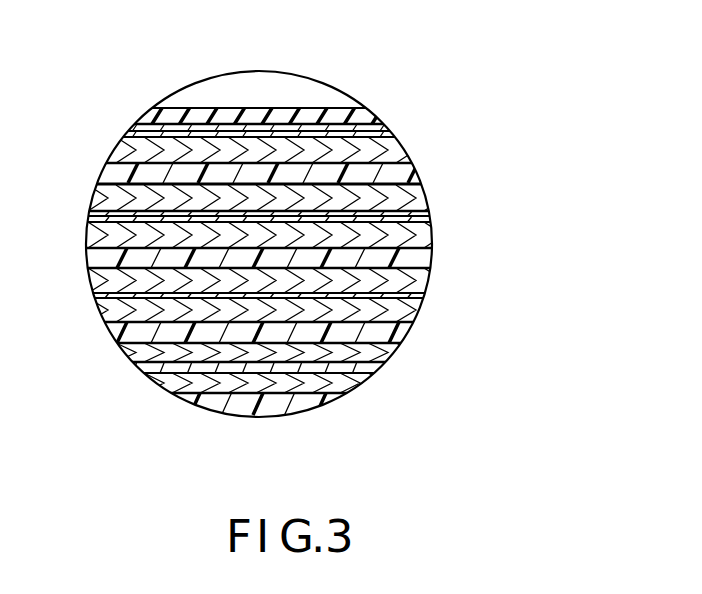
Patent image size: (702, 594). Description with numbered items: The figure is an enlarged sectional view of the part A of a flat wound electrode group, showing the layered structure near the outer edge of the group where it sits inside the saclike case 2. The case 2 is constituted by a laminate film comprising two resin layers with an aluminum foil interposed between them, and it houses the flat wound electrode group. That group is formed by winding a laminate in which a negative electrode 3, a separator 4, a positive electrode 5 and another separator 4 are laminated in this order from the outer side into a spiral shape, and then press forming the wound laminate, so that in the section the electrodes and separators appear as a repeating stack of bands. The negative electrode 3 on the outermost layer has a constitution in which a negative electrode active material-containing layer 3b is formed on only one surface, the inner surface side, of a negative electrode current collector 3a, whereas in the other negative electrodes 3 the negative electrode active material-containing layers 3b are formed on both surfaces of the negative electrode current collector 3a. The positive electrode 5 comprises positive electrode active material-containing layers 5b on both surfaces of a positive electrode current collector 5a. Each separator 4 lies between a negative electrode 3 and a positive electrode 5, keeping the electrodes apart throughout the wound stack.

The part A is at (180, 100).
The saclike case 2 is at (373, 110).
The negative electrode 3 is at (472, 85).
The negative electrode current collector 3a is at (393, 131).
The negative electrode active material-containing layer 3b is at (397, 150).
The separator 4 is at (112, 175).
The positive electrode 5 is at (497, 157).
The positive electrode current collector 5a is at (425, 214).
The positive electrode active material-containing layer 5b is at (425, 187).